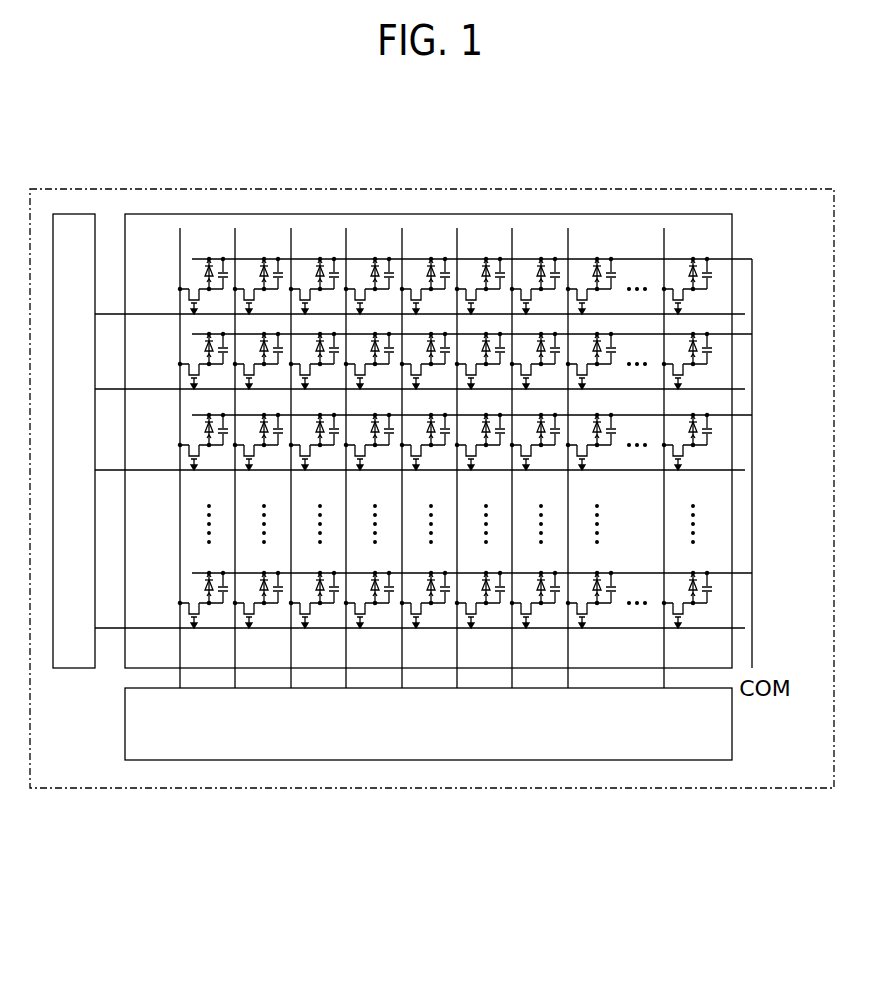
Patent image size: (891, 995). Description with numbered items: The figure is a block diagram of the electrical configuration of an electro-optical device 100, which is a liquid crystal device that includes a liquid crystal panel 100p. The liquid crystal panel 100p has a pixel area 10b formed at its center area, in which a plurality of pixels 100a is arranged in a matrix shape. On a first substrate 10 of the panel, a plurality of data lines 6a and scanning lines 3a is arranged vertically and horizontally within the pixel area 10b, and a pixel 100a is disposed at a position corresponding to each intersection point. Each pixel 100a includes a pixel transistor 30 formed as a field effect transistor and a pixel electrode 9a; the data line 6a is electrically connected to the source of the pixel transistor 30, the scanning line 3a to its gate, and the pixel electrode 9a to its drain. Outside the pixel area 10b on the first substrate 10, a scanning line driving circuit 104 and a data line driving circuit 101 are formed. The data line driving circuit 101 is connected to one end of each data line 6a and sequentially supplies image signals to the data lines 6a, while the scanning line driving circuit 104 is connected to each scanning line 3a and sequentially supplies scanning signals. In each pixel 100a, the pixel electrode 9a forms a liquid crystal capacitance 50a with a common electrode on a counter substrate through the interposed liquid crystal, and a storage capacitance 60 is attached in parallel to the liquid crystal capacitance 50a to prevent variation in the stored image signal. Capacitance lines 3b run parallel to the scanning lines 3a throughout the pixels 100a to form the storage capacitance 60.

The electro-optical device 100 is at (432, 442).
The first substrate 10 is at (432, 442).
The liquid crystal panel 100p is at (424, 190).
The scanning line driving circuit 104 is at (77, 213).
The data line driving circuit 101 is at (657, 760).
The pixel area 10b is at (527, 213).
The data line 6a is at (291, 243).
The scanning line 3a is at (652, 312).
The capacitance line 3b is at (622, 258).
The pixel 100a is at (426, 365).
The liquid crystal capacitance 50a is at (207, 263).
The storage capacitance 60 is at (224, 272).
The pixel electrode 9a is at (210, 291).
The pixel transistor 30 is at (187, 297).